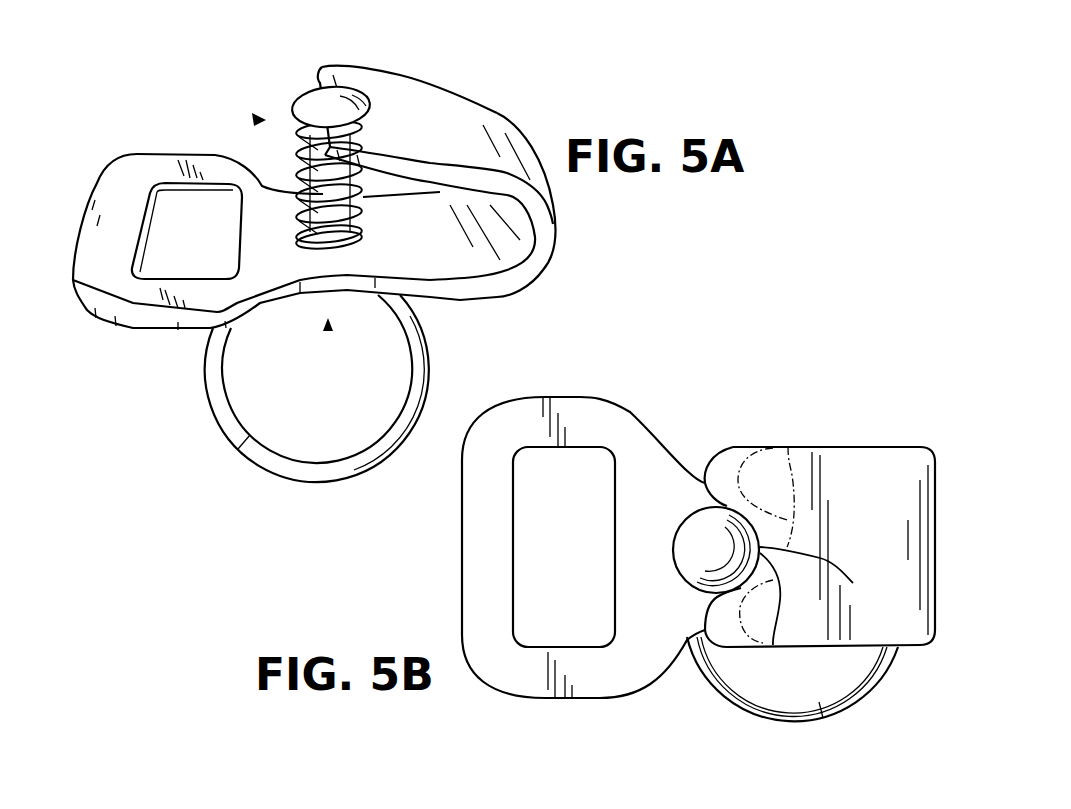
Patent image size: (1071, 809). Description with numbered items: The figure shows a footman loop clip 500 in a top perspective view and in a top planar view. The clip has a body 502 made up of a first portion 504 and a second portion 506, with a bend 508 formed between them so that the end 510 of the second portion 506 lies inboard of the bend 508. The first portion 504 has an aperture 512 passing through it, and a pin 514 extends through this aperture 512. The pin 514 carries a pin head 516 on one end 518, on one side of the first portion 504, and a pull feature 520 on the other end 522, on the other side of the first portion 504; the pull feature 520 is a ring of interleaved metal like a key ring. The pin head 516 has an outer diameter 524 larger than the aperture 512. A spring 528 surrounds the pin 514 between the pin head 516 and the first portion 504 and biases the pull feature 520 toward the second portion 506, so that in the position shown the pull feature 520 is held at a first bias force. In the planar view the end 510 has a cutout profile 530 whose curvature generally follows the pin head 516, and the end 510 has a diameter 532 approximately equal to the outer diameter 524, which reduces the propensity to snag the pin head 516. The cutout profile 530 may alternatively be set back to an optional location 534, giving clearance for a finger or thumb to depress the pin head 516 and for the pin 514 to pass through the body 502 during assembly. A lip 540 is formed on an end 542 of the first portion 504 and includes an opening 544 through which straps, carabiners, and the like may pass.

In FIG. 5A, the footman loop clip 500 is at (468, 64).
In FIG. 5A, the body 502 is at (438, 275).
In FIG. 5A, the first portion 504 is at (290, 251).
In FIG. 5A, the second portion 506 is at (449, 136).
In FIG. 5A, the bend 508 is at (555, 242).
In FIG. 5A, the end 510 is at (323, 65).
In FIG. 5B, the end 510 is at (737, 448).
In FIG. 5A, the aperture 512 is at (352, 248).
In FIG. 5A, the pin 514 is at (320, 174).
In FIG. 5A, the pin head 516 is at (300, 104).
In FIG. 5A, the one end 518 is at (258, 119).
In FIG. 5A, the pull feature 520 is at (205, 397).
In FIG. 5A, the other end 522 is at (328, 328).
In FIG. 5A, the outer diameter 524 is at (310, 93).
In FIG. 5B, the outer diameter 524 is at (670, 540).
In FIG. 5A, the spring 528 is at (293, 200).
In FIG. 5B, the cutout profile 530 is at (853, 583).
In FIG. 5B, the diameter 532 is at (773, 645).
In FIG. 5B, the optional location 534 is at (788, 447).
In FIG. 5A, the lip 540 is at (107, 273).
In FIG. 5B, the lip 540 is at (482, 543).
In FIG. 5A, the end 542 is at (78, 237).
In FIG. 5B, the end 542 is at (462, 595).
In FIG. 5A, the opening 544 is at (162, 269).